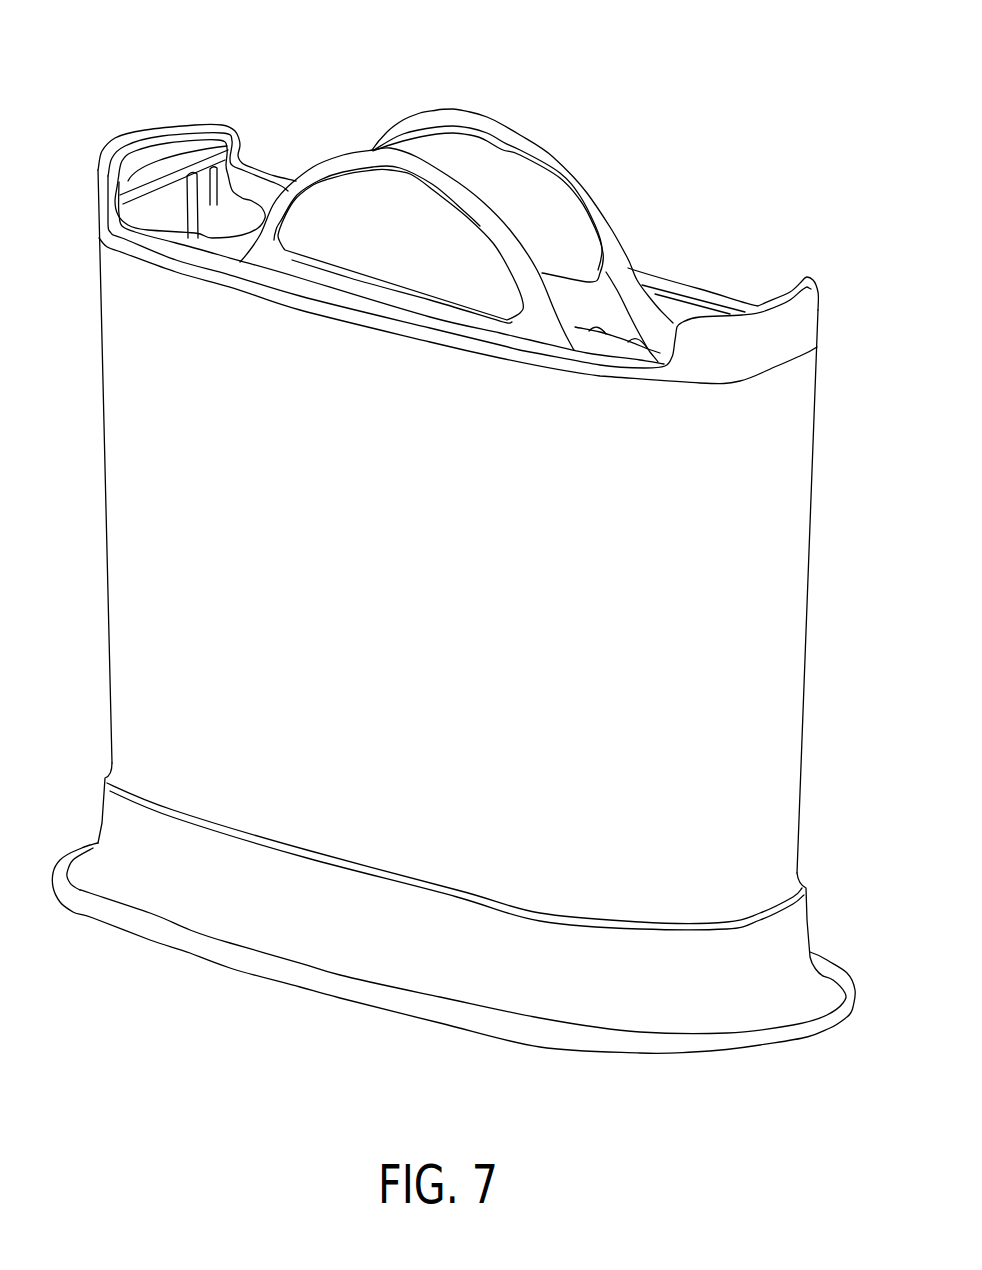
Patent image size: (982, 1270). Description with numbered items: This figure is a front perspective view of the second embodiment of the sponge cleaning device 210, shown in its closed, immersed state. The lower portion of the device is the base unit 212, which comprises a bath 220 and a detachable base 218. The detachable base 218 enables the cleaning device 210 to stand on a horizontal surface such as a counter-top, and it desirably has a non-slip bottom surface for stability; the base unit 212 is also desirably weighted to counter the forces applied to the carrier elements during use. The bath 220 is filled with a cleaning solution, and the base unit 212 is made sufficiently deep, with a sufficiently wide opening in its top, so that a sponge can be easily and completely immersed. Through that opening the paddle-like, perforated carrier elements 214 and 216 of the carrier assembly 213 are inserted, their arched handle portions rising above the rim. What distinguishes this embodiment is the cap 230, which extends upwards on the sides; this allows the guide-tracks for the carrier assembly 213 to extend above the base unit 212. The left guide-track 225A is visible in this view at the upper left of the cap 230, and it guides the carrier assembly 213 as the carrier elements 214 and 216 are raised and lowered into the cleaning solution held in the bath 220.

The sponge cleaning device 210 is at (107, 66).
The base unit 212 is at (103, 450).
The carrier assembly 213 is at (360, 150).
The carrier element 214 is at (328, 187).
The carrier element 216 is at (515, 165).
The detachable base 218 is at (128, 840).
The bath 220 is at (593, 502).
The left guide-track 225A is at (203, 177).
The cap 230 is at (690, 280).